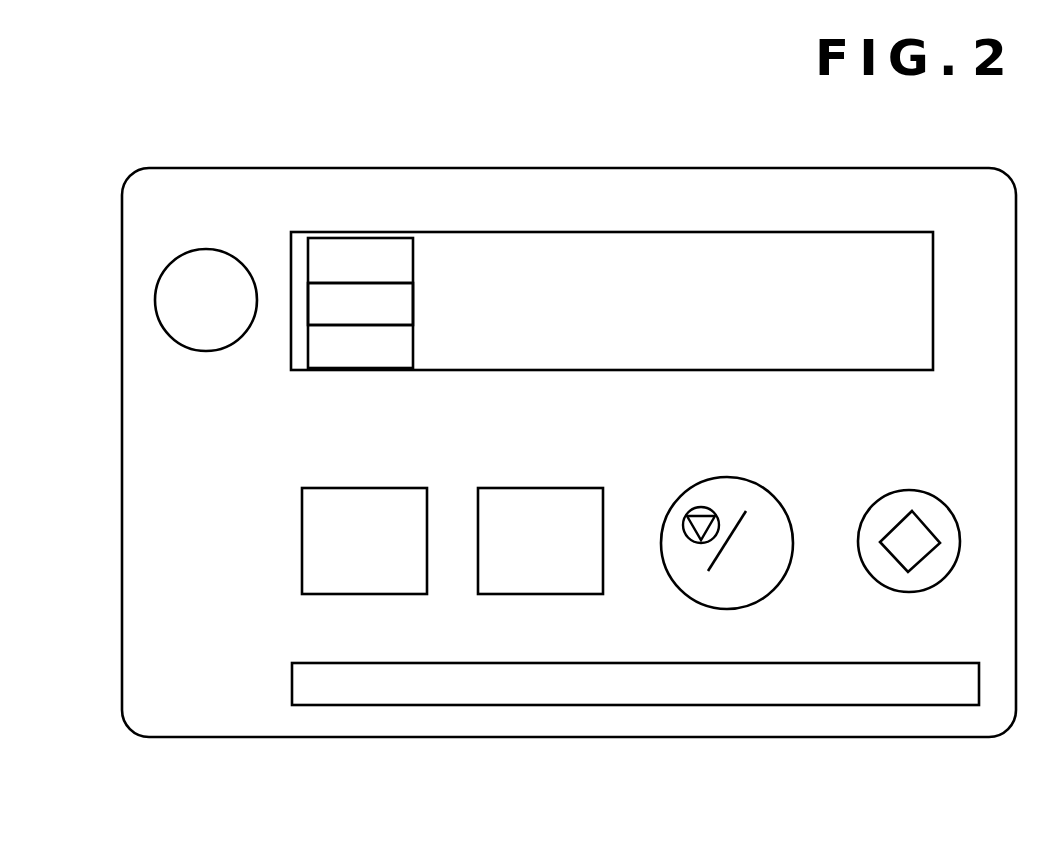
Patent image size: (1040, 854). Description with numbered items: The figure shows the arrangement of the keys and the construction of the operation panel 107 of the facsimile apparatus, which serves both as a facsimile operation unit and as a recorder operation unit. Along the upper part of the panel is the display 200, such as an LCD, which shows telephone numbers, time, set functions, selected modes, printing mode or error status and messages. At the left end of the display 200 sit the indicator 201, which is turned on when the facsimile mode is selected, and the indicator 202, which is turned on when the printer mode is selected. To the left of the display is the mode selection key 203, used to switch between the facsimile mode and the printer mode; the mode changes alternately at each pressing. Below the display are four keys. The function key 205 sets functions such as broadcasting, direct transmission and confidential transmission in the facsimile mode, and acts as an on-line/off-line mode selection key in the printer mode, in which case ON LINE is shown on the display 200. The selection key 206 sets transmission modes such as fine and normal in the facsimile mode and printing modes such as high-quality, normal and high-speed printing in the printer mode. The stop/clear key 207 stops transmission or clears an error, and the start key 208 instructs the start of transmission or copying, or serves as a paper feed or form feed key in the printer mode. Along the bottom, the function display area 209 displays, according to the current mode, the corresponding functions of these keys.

The operation panel 107 is at (817, 161).
The display 200 is at (825, 232).
The indicator 201 is at (407, 243).
The indicator 202 is at (415, 305).
The mode selection key 203 is at (173, 262).
The function key 205 is at (343, 488).
The selection key 206 is at (522, 488).
The stop/clear key 207 is at (739, 478).
The start key 208 is at (901, 491).
The function display area 209 is at (292, 694).